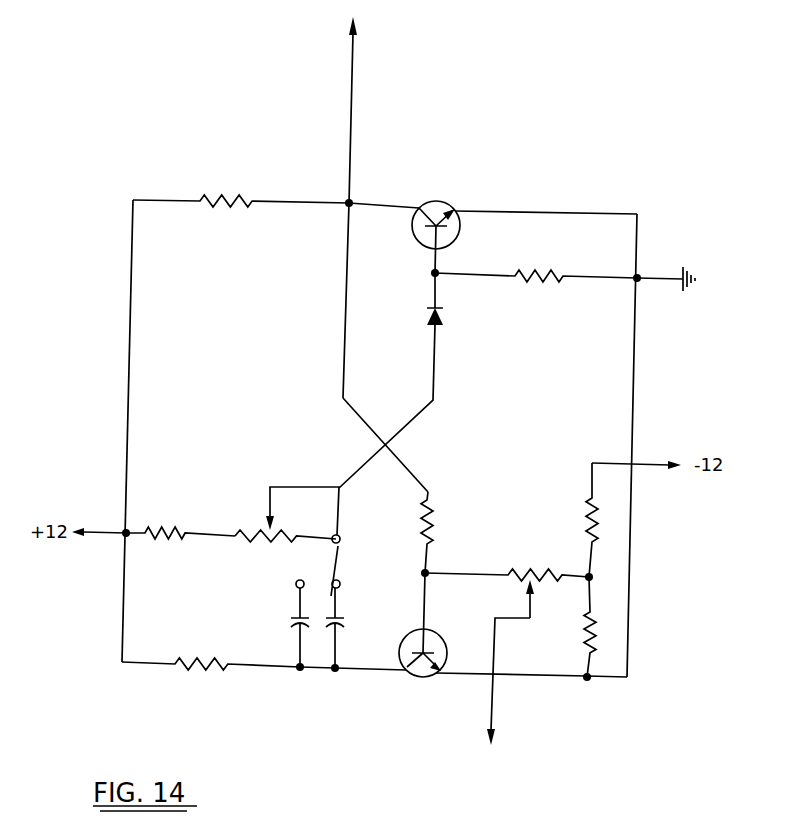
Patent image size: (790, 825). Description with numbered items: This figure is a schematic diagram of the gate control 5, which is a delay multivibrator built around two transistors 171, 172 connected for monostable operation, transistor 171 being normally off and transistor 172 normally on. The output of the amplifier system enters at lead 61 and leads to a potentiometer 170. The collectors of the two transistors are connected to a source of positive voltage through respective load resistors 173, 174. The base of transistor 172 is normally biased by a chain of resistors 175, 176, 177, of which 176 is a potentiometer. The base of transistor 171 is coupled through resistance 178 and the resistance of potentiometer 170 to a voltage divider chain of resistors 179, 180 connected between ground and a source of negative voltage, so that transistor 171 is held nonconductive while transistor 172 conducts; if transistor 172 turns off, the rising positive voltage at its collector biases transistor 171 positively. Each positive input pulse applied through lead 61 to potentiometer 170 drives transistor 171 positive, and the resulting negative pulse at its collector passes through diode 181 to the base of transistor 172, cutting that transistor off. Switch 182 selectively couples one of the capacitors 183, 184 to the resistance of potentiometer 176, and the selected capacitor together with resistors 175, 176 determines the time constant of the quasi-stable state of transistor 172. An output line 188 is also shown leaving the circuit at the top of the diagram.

The gate control 5 is at (100, 320).
The lead 61 is at (492, 700).
The potentiometer 170 is at (528, 546).
The transistor 171 is at (412, 672).
The transistor 172 is at (461, 226).
The load resistor 173 is at (193, 654).
The load resistor 174 is at (236, 197).
The resistor 175 is at (145, 523).
The potentiometer 176 is at (265, 543).
The resistor 177 is at (542, 283).
The resistance 178 is at (431, 517).
The resistor 179 is at (582, 643).
The resistor 180 is at (589, 512).
The diode 181 is at (440, 318).
The switch 182 is at (338, 560).
The capacitor 183 is at (293, 617).
The capacitor 184 is at (337, 617).
The output line 188 is at (353, 53).